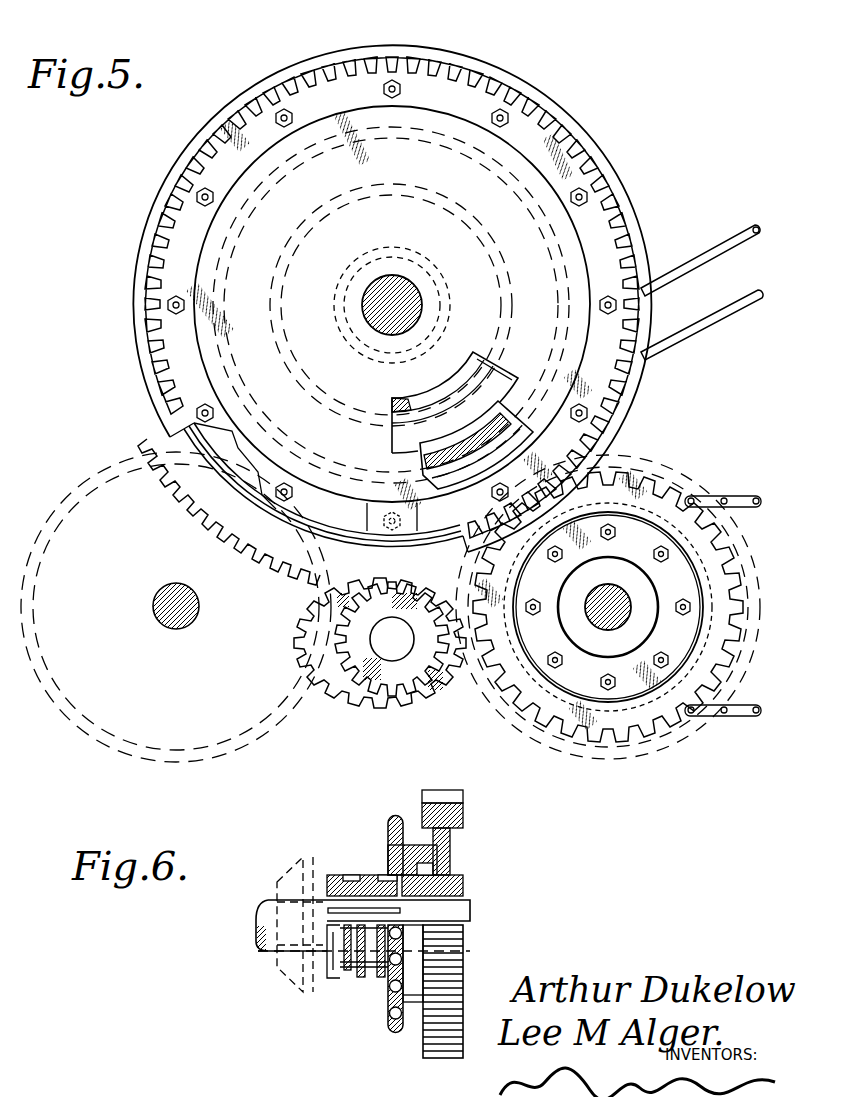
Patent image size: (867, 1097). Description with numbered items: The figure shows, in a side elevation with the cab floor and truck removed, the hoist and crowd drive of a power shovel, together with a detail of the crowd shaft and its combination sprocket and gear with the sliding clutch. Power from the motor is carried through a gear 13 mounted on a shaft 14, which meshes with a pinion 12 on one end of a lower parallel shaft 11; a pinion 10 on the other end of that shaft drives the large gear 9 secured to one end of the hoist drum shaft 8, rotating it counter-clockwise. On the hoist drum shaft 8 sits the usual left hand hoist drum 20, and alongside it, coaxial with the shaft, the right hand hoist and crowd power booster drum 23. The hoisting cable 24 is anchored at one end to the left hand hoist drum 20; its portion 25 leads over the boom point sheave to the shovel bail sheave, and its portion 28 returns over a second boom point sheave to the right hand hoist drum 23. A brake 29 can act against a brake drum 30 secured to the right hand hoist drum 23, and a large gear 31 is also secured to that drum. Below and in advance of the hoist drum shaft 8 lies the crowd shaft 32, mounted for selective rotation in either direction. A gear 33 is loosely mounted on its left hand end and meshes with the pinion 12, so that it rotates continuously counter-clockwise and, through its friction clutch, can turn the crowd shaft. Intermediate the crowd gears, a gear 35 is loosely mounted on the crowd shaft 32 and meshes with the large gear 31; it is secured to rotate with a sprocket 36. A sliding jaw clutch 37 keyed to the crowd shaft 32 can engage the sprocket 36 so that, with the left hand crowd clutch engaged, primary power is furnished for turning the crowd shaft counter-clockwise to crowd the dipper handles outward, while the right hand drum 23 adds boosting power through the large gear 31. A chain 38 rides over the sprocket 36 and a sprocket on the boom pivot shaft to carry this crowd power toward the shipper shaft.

In FIG. 5, the hoist drum shaft 8 is at (405, 296).
In FIG. 5, the large gear 9 is at (287, 553).
In FIG. 5, the pinion 10 is at (384, 600).
In FIG. 5, the lower parallel shaft 11 is at (392, 639).
In FIG. 5, the pinion 12 is at (386, 706).
In FIG. 5, the gear 13 is at (300, 693).
In FIG. 5, the shaft 14 is at (160, 607).
In FIG. 5, the hoist drum 20 is at (418, 466).
In FIG. 5, the hoist and crowd power booster drum 23 is at (400, 400).
In FIG. 5, the hoisting cable 24 is at (752, 286).
In FIG. 5, the portion of the hoist cable 25 is at (712, 320).
In FIG. 5, the portion of the cable 28 is at (700, 260).
In FIG. 5, the brake 29 is at (311, 56).
In FIG. 5, the brake drum 30 is at (136, 290).
In FIG. 5, the large gear 31 is at (157, 322).
In FIG. 5, the crowd shaft 32 is at (606, 598).
In FIG. 6, the crowd shaft 32 is at (470, 905).
In FIG. 5, the gear 33 is at (485, 700).
In FIG. 5, the gear 35 is at (660, 480).
In FIG. 6, the gear 35 is at (465, 800).
In FIG. 5, the sprocket 36 is at (677, 645).
In FIG. 6, the sprocket 36 is at (387, 840).
In FIG. 6, the sliding jaw clutch 37 is at (362, 972).
In FIG. 5, the chain 38 is at (750, 497).